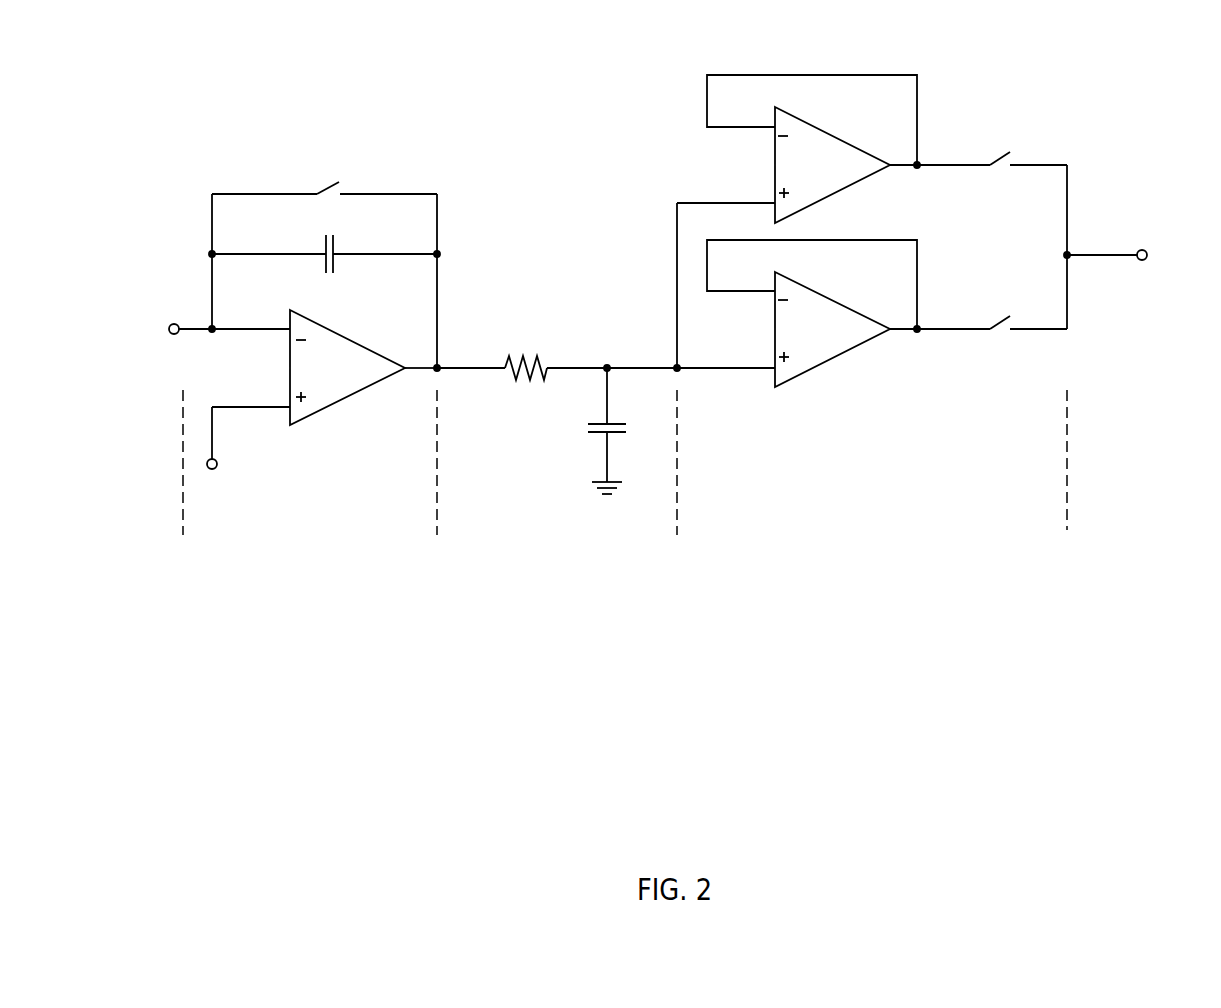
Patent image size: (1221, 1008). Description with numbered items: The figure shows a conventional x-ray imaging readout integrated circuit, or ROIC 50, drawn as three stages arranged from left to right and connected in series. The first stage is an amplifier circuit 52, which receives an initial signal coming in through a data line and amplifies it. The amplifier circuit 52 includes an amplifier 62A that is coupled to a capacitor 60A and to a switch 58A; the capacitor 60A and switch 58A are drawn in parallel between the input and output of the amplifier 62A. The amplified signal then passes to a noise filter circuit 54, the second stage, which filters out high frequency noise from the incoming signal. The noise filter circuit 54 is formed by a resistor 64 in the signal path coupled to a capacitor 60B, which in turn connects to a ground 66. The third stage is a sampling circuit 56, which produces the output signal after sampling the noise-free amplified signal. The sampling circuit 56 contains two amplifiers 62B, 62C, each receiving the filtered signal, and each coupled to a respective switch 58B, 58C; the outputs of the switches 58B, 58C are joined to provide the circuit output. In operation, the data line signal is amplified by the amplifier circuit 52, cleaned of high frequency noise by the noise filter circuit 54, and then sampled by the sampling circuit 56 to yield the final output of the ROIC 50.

The ROIC 50 is at (614, 94).
The amplifier circuit 52 is at (309, 570).
The noise filter circuit 54 is at (551, 568).
The sampling circuit 56 is at (876, 570).
The switch 58A is at (330, 188).
The switch 58B is at (993, 161).
The switch 58C is at (993, 325).
The capacitor 60A is at (327, 243).
The capacitor 60B is at (598, 424).
The amplifier 62A is at (315, 322).
The amplifier 62B is at (815, 126).
The amplifier 62C is at (815, 292).
The resistor 64 is at (524, 356).
The ground 66 is at (600, 482).